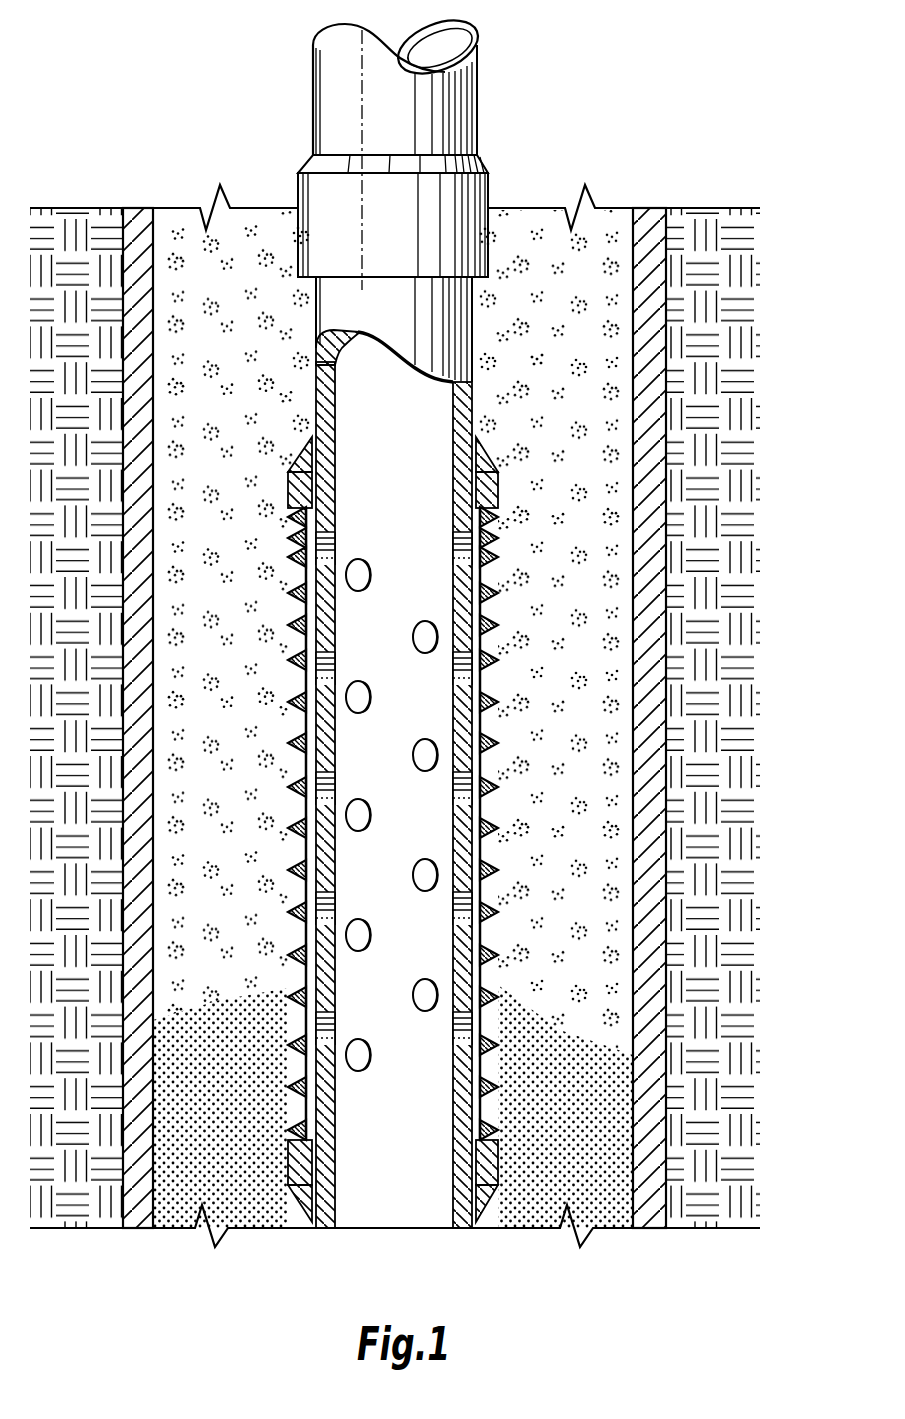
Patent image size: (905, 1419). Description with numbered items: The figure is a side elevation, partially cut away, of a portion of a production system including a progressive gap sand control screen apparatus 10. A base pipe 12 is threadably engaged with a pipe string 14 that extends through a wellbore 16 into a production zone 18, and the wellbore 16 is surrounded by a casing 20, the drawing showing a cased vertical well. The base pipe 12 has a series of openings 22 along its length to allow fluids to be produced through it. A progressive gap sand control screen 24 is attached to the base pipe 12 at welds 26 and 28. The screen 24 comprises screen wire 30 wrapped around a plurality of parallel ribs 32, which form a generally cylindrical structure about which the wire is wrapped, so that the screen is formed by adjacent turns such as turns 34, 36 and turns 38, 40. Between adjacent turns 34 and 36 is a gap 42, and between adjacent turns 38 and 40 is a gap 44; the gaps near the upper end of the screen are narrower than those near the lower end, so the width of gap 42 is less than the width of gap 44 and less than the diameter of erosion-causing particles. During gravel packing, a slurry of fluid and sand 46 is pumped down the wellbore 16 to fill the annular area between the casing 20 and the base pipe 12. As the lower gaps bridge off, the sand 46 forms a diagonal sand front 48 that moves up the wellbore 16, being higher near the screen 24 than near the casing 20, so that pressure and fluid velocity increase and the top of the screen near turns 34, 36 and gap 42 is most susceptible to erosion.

The progressive gap sand control screen apparatus 10 is at (617, 84).
The base pipe 12 is at (453, 327).
The pipe string 14 is at (478, 72).
The wellbore 16 is at (540, 207).
The production zone 18 is at (820, 613).
The casing 20 is at (645, 213).
The openings 22 is at (368, 572).
The progressive gap sand control screen 24 is at (407, 864).
The weld 26 is at (485, 457).
The weld 28 is at (487, 1207).
The screen wire 30 is at (498, 631).
The ribs 32 is at (407, 822).
The turn 34 is at (288, 520).
The turn 36 is at (288, 540).
The turn 38 is at (288, 744).
The turn 40 is at (288, 788).
The gap 42 is at (498, 531).
The gap 44 is at (498, 768).
The sand 46 is at (540, 354).
The sand front 48 is at (565, 1040).